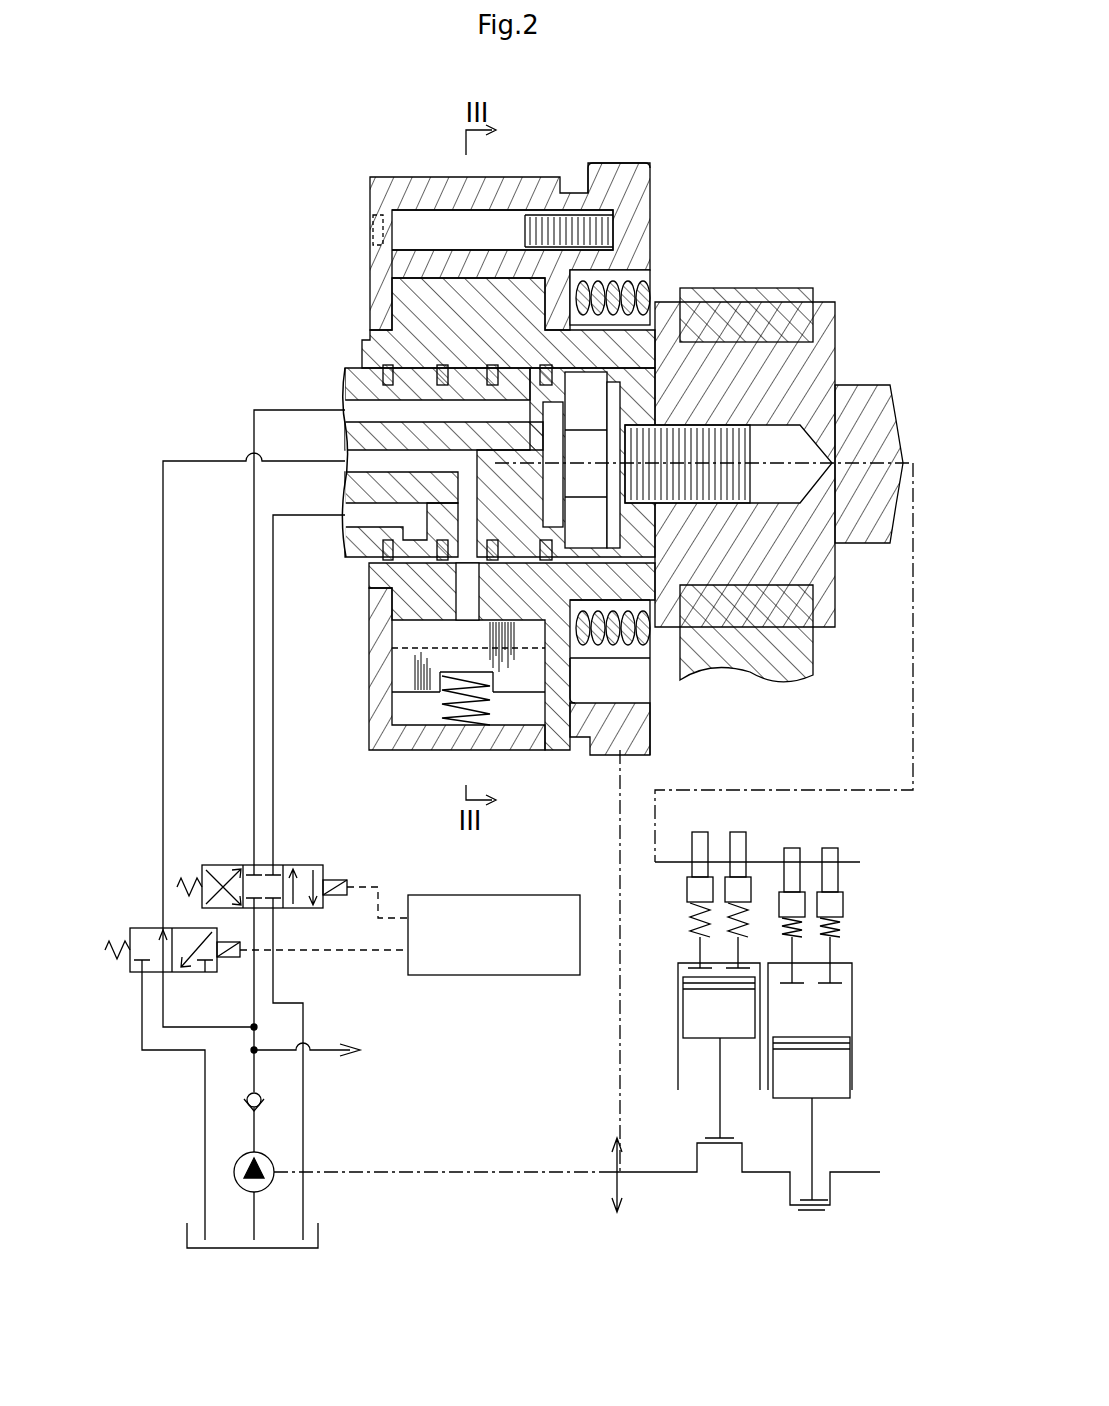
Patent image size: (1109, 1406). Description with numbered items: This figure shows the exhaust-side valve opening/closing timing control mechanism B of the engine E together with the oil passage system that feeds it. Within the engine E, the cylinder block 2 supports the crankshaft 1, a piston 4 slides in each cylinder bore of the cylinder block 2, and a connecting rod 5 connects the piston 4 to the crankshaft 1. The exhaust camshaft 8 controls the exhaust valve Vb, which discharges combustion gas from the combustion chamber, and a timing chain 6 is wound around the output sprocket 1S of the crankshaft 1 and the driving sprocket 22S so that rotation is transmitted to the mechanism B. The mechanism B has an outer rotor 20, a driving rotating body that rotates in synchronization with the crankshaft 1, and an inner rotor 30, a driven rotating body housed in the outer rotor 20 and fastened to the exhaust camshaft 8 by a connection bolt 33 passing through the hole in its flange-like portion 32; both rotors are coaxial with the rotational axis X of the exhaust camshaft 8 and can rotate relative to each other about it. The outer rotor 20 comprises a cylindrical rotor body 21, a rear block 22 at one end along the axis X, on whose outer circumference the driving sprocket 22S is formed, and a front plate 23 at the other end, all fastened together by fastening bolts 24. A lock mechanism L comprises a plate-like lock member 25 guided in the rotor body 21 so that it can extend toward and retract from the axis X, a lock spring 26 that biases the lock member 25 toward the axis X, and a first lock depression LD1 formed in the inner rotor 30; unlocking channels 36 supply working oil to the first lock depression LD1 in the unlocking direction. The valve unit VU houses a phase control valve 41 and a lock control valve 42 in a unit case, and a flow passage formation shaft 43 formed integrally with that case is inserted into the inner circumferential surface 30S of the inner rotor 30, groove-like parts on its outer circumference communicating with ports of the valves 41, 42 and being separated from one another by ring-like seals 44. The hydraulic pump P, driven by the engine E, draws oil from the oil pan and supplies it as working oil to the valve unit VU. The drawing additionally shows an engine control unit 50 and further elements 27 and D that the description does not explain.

The outer rotor 20 is at (434, 160).
The rotor body 21 is at (500, 177).
The driving sprocket 22S is at (625, 163).
The rear block 22 is at (650, 705).
The front plate 23 is at (372, 610).
The fastening bolt 24 is at (372, 232).
The lock member 25 is at (432, 735).
The lock spring 26 is at (490, 700).
The spring 27 is at (640, 285).
The inner rotor 30 is at (400, 300).
The inner circumferential surface 30S is at (599, 375).
The flange-like portion 32 is at (670, 548).
The connection bolt 33 is at (750, 478).
The unlocking channel 36 is at (470, 590).
The flow passage formation shaft 43 is at (340, 378).
The ring-like seal 44 is at (390, 368).
The phase control valve 41 is at (225, 865).
The lock control valve 42 is at (142, 928).
The engine control unit 50 is at (490, 978).
The exhaust camshaft 8 is at (870, 385).
The timing chain 6 is at (617, 862).
The crankshaft 1 is at (652, 1170).
The output sprocket 1S is at (612, 1163).
The cylinder block 2 is at (678, 1062).
The piston 4 is at (683, 1010).
The connecting rod 5 is at (720, 1100).
The engine E is at (838, 126).
The exhaust-side valve opening/closing timing control mechanism B is at (356, 186).
The rotational axis X is at (845, 466).
The lock mechanism L is at (380, 690).
The first lock depression LD1 is at (402, 648).
The valve unit VU is at (314, 848).
The hydraulic pump P is at (236, 1160).
The exhaust valve Vb is at (695, 965).
The valve drive D is at (860, 906).